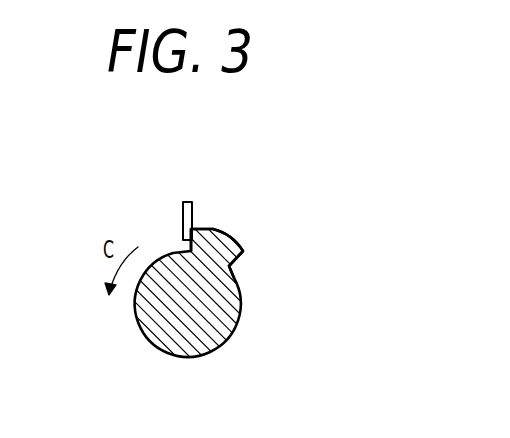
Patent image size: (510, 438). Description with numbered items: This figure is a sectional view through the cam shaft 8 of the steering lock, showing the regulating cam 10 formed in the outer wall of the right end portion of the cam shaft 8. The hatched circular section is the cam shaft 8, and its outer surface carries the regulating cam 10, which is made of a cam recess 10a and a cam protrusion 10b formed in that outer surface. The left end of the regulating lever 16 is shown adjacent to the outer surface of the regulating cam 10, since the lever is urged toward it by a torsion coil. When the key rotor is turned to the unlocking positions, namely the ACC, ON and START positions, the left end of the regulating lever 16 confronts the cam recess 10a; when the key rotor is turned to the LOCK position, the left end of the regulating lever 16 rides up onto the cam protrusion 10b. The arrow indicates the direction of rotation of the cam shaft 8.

The cam shaft 8 is at (168, 335).
The regulating cam 10 is at (185, 277).
The cam recess 10a is at (242, 287).
The cam protrusion 10b is at (217, 231).
The regulating lever 16 is at (183, 204).